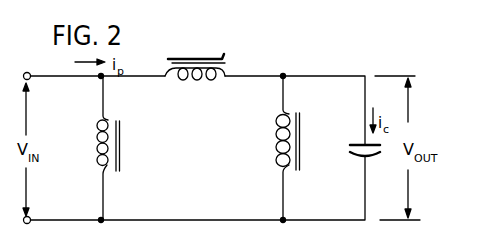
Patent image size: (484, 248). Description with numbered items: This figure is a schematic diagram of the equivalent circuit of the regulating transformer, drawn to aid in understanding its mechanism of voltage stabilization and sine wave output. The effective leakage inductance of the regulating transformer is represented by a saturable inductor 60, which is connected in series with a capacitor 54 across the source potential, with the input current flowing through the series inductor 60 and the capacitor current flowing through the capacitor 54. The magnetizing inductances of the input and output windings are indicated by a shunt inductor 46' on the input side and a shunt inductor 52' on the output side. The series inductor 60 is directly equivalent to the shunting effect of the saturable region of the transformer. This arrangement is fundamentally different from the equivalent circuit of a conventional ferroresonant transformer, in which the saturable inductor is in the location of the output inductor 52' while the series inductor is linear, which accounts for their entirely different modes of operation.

The inductor 46' is at (122, 148).
The inductor 52' is at (270, 148).
The capacitor 54 is at (360, 156).
The saturable inductor 60 is at (185, 80).